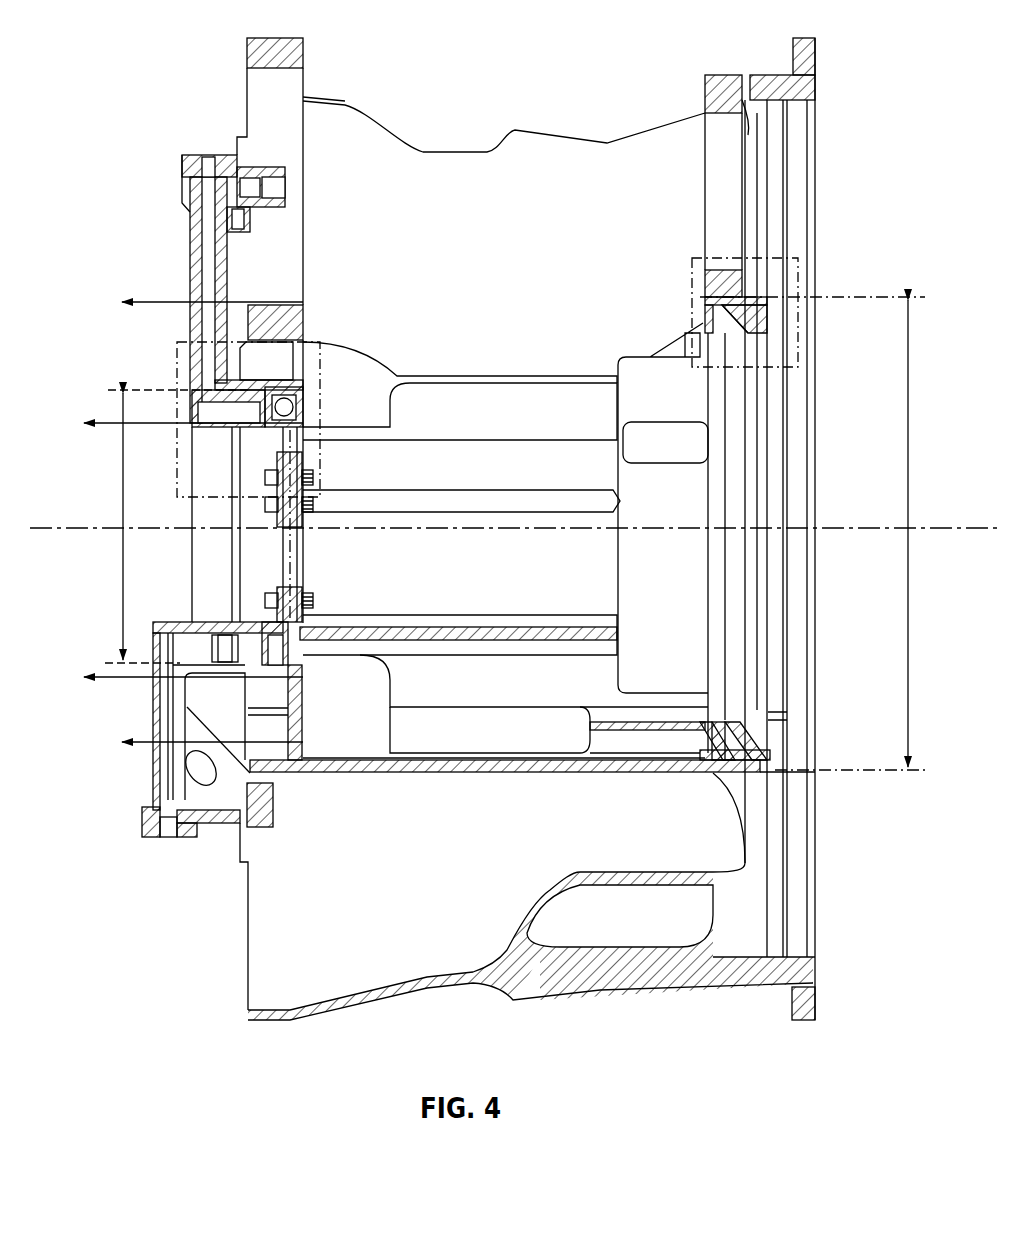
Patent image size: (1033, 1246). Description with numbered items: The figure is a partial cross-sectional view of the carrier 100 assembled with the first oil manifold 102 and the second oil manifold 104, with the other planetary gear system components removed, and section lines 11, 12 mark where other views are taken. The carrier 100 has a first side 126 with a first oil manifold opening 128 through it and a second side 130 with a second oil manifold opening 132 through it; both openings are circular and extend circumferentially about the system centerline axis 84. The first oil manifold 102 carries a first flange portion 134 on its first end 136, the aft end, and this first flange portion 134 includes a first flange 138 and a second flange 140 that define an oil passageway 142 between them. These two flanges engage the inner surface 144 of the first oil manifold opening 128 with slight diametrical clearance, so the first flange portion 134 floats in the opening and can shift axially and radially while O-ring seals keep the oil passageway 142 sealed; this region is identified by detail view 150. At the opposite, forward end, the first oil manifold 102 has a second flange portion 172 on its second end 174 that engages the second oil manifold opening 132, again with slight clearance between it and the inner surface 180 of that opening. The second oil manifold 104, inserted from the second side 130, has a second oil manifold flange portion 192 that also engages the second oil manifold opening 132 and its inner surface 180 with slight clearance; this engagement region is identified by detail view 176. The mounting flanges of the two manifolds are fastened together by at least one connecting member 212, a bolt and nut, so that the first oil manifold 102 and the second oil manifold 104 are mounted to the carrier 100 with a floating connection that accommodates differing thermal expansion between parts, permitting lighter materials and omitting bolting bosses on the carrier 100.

The carrier 100 is at (786, 138).
The first oil manifold 102 is at (757, 665).
The second oil manifold 104 is at (190, 262).
The first side 126 is at (772, 262).
The first oil manifold opening 128 is at (908, 405).
The second side 130 is at (262, 680).
The second oil manifold opening 132 is at (123, 575).
The first flange portion 134 is at (761, 736).
The first end 136 is at (770, 470).
The first flange 138 is at (776, 758).
The second flange 140 is at (714, 755).
The oil passageway 142 is at (739, 763).
The inner surface 144 is at (736, 306).
The detail view 150 is at (774, 303).
The second flange portion 172 is at (318, 628).
The second end 174 is at (312, 660).
The detail view 176 is at (177, 440).
The inner surface 180 is at (303, 450).
The second oil manifold flange portion 192 is at (215, 400).
The connecting member 212 is at (263, 505).
The system centerline axis 84 is at (846, 527).
The section line 11- 11 is at (194, 522).
The section line 12- 12 is at (172, 550).